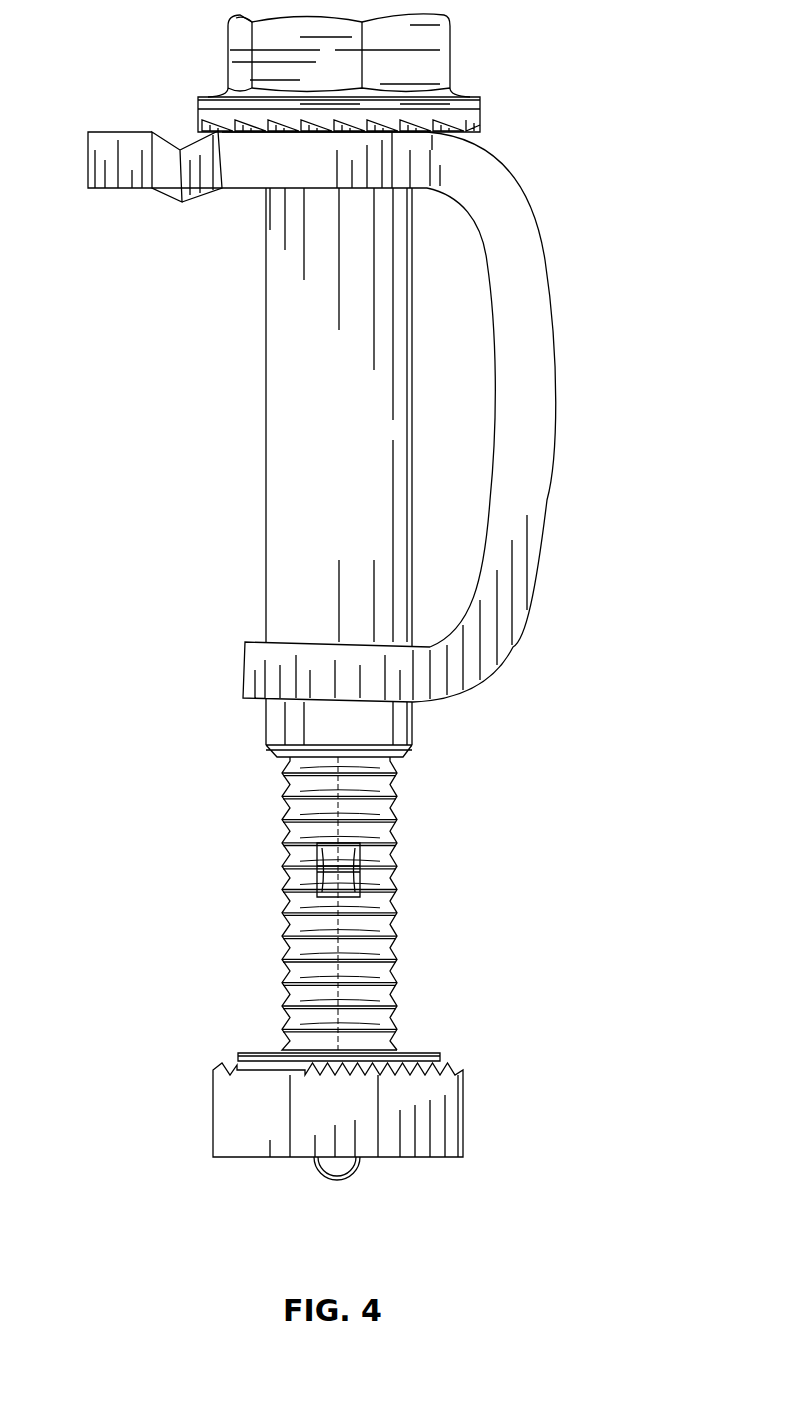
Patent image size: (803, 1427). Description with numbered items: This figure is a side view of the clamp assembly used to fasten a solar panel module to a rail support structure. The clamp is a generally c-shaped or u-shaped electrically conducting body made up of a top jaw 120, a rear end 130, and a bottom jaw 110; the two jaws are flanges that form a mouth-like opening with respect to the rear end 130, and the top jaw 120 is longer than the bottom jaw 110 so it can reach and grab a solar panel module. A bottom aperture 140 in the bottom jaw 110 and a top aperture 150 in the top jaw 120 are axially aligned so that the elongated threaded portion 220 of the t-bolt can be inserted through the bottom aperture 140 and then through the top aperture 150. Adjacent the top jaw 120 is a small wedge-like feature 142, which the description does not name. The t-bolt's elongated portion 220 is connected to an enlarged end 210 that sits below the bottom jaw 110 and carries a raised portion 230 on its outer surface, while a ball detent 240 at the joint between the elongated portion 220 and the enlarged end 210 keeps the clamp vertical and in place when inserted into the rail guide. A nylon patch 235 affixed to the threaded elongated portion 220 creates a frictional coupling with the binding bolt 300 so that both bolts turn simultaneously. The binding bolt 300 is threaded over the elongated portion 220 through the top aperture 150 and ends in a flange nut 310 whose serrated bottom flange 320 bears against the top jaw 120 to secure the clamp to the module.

The bottom jaw 110 is at (343, 399).
The top jaw 120 is at (116, 132).
The rear end 130 is at (553, 407).
The bottom aperture 140 is at (245, 670).
The wedge projection 142 is at (173, 198).
The top aperture 150 is at (267, 188).
The enlarged end 210 is at (463, 1115).
The elongated threaded portion 220 is at (398, 947).
The raised portion 230 is at (447, 1065).
The nylon patch 235 is at (320, 862).
The ball detent 240 is at (357, 1170).
The binding bolt 300 is at (369, 532).
The flange nut 310 is at (450, 60).
The serrated bottom flange 320 is at (453, 132).